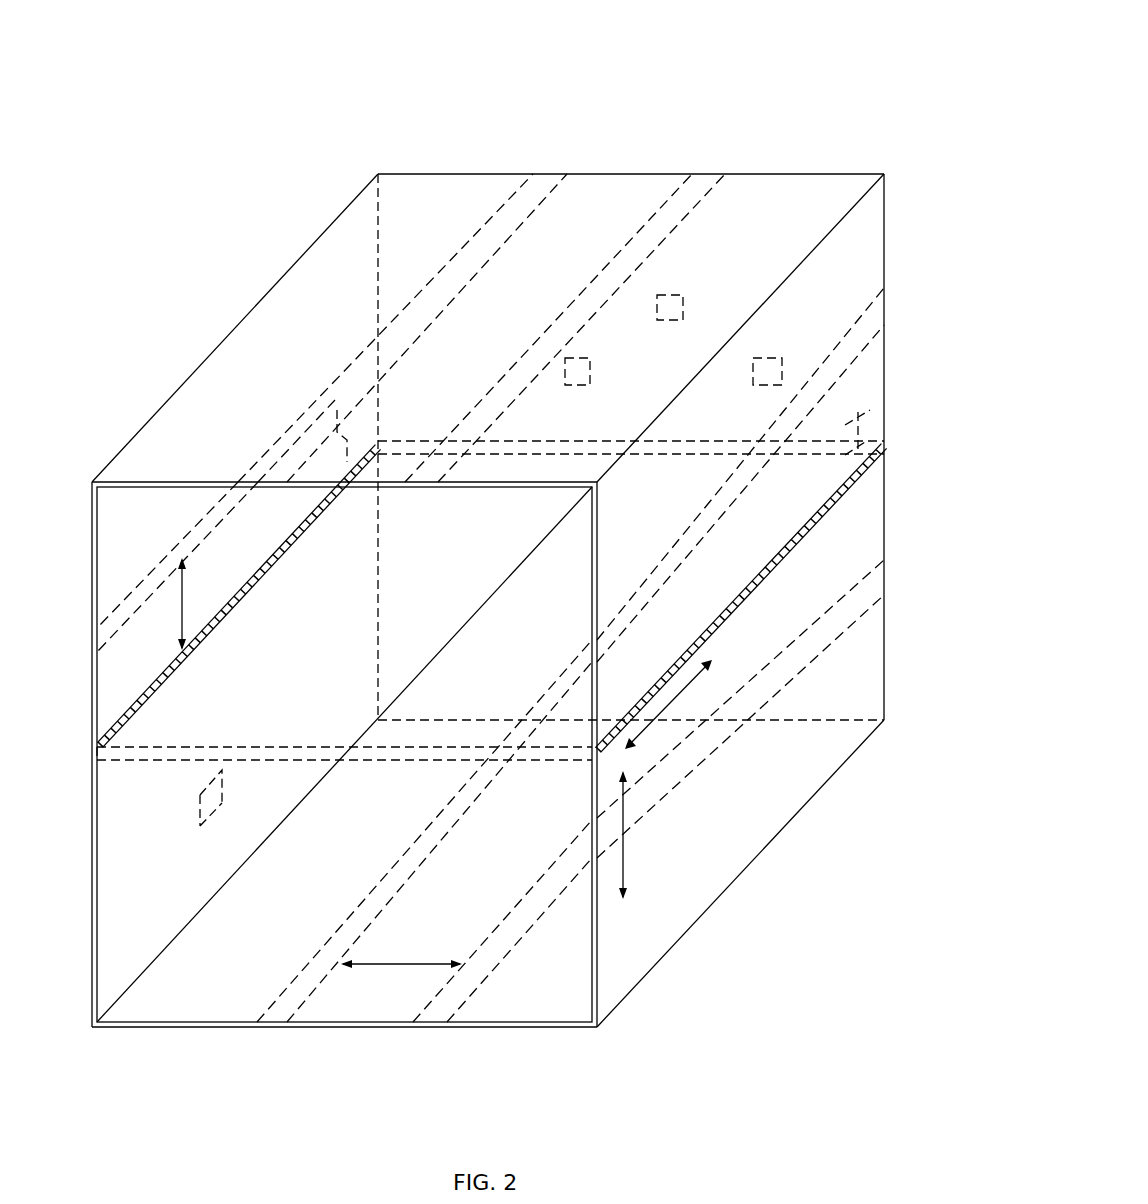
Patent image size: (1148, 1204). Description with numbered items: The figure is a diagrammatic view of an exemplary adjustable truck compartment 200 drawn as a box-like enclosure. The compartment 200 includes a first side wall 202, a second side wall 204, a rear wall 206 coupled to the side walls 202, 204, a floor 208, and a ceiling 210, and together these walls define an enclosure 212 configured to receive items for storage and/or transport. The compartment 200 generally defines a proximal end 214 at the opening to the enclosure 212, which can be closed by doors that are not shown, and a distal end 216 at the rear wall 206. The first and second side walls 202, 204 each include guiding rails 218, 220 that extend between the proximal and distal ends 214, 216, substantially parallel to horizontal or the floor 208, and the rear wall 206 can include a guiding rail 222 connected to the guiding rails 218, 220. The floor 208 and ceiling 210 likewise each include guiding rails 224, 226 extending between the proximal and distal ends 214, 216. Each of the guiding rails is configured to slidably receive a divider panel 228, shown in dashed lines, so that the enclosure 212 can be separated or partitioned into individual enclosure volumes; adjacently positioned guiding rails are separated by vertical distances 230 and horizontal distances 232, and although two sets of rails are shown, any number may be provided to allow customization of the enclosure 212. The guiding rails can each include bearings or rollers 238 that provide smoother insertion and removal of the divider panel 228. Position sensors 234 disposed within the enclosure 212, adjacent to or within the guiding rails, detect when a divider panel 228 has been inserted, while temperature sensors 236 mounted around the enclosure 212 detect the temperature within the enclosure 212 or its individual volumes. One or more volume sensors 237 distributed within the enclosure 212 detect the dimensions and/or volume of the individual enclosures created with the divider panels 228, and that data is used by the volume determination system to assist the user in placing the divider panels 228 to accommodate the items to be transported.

The adjustable truck compartment 200 is at (750, 52).
The first side wall 202 is at (92, 950).
The second side wall 204 is at (598, 990).
The rear wall 206 is at (884, 650).
The floor 208 is at (150, 1005).
The ceiling 210 is at (600, 205).
The enclosure 212 is at (344, 754).
The proximal end 214 is at (322, 1050).
The distal end 216 is at (716, 152).
The guiding rail 218 is at (132, 592).
The guiding rail 220 is at (884, 364).
The guiding rail 222 is at (884, 300).
The guiding rail 224 is at (268, 990).
The guiding rail 226 is at (455, 253).
The divider panel 228 is at (97, 797).
The vertical distance 230 is at (178, 614).
The horizontal distance 232 is at (410, 966).
The position sensor 234 is at (330, 380).
The temperature sensor 236 is at (683, 298).
The volume sensor 237 is at (562, 358).
The bearings or rollers 238 is at (150, 688).